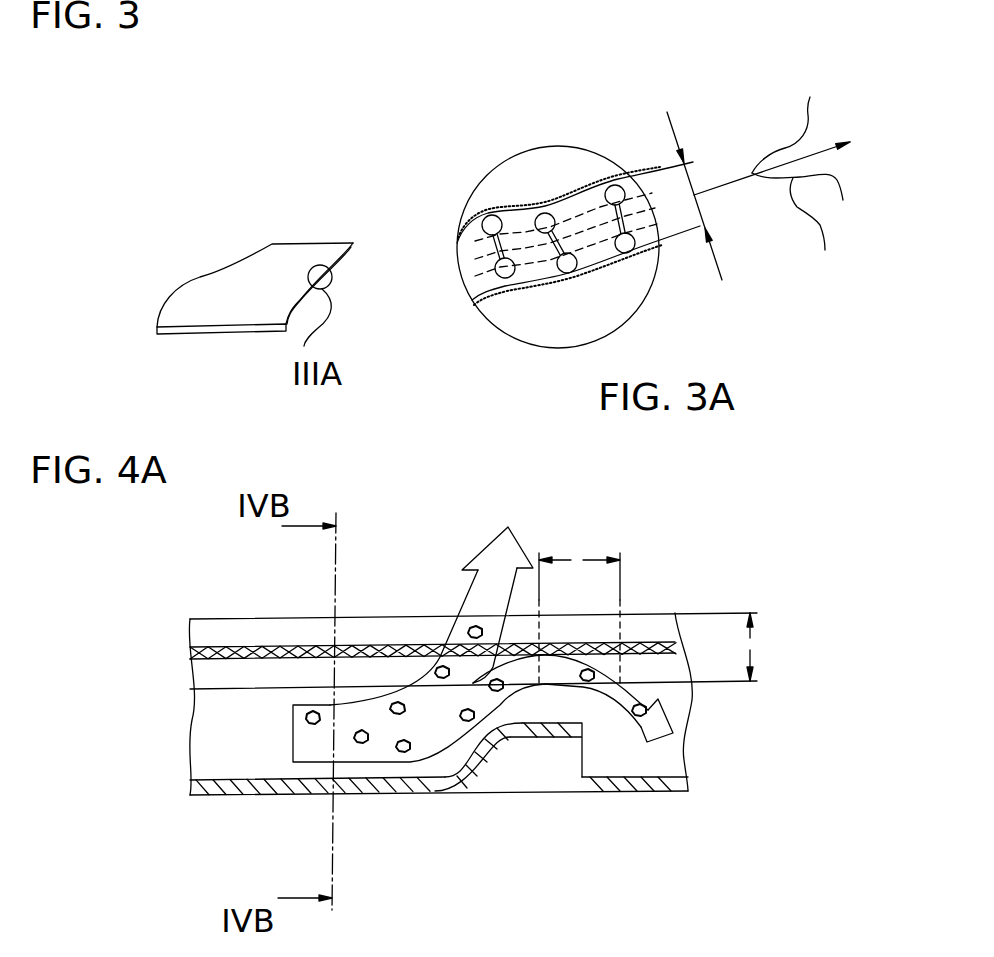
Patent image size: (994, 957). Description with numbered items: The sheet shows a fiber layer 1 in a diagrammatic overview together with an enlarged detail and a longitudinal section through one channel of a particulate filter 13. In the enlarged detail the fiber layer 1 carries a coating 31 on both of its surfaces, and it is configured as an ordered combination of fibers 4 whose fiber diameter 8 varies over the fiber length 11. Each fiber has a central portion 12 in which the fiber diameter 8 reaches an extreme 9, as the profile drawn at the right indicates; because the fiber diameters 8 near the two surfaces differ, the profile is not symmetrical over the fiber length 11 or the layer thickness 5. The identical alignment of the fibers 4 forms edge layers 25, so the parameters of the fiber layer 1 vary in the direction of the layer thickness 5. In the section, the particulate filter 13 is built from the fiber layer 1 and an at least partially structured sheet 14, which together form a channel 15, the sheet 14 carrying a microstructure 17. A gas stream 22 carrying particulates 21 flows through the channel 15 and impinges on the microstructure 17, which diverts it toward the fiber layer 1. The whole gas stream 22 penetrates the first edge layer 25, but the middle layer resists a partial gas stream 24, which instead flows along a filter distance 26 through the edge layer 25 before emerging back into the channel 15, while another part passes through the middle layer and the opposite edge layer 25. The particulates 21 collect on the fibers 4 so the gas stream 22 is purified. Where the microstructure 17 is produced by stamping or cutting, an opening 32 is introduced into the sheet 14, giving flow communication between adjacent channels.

In FIG. 3, the fiber layer 1 is at (228, 288).
In FIG. 4A, the fiber layer 1 is at (280, 605).
In FIG. 3A, the fibers 4 is at (478, 212).
In FIG. 3A, the central portion 12 is at (522, 213).
In FIG. 3A, the coating 31 is at (603, 178).
In FIG. 3A, the edge layers 25 is at (488, 228).
In FIG. 4A, the edge layers 25 is at (205, 632).
In FIG. 3A, the extreme 9 is at (749, 160).
In FIG. 3A, the fiber diameter 8 is at (797, 193).
In FIG. 3A, the fiber length 11 is at (696, 212).
In FIG. 4A, the partial gas stream 24 is at (487, 585).
In FIG. 4A, the filter distance 26 is at (573, 560).
In FIG. 4A, the layer thickness 5 is at (752, 650).
In FIG. 4A, the channel 15 is at (205, 743).
In FIG. 4A, the gas stream 22 is at (302, 747).
In FIG. 4A, the particulates 21 is at (358, 738).
In FIG. 4A, the microstructure 17 is at (477, 763).
In FIG. 4A, the opening 32 is at (582, 755).
In FIG. 4A, the sheet 14 is at (464, 784).
In FIG. 4A, the particulate filter 13 is at (693, 893).